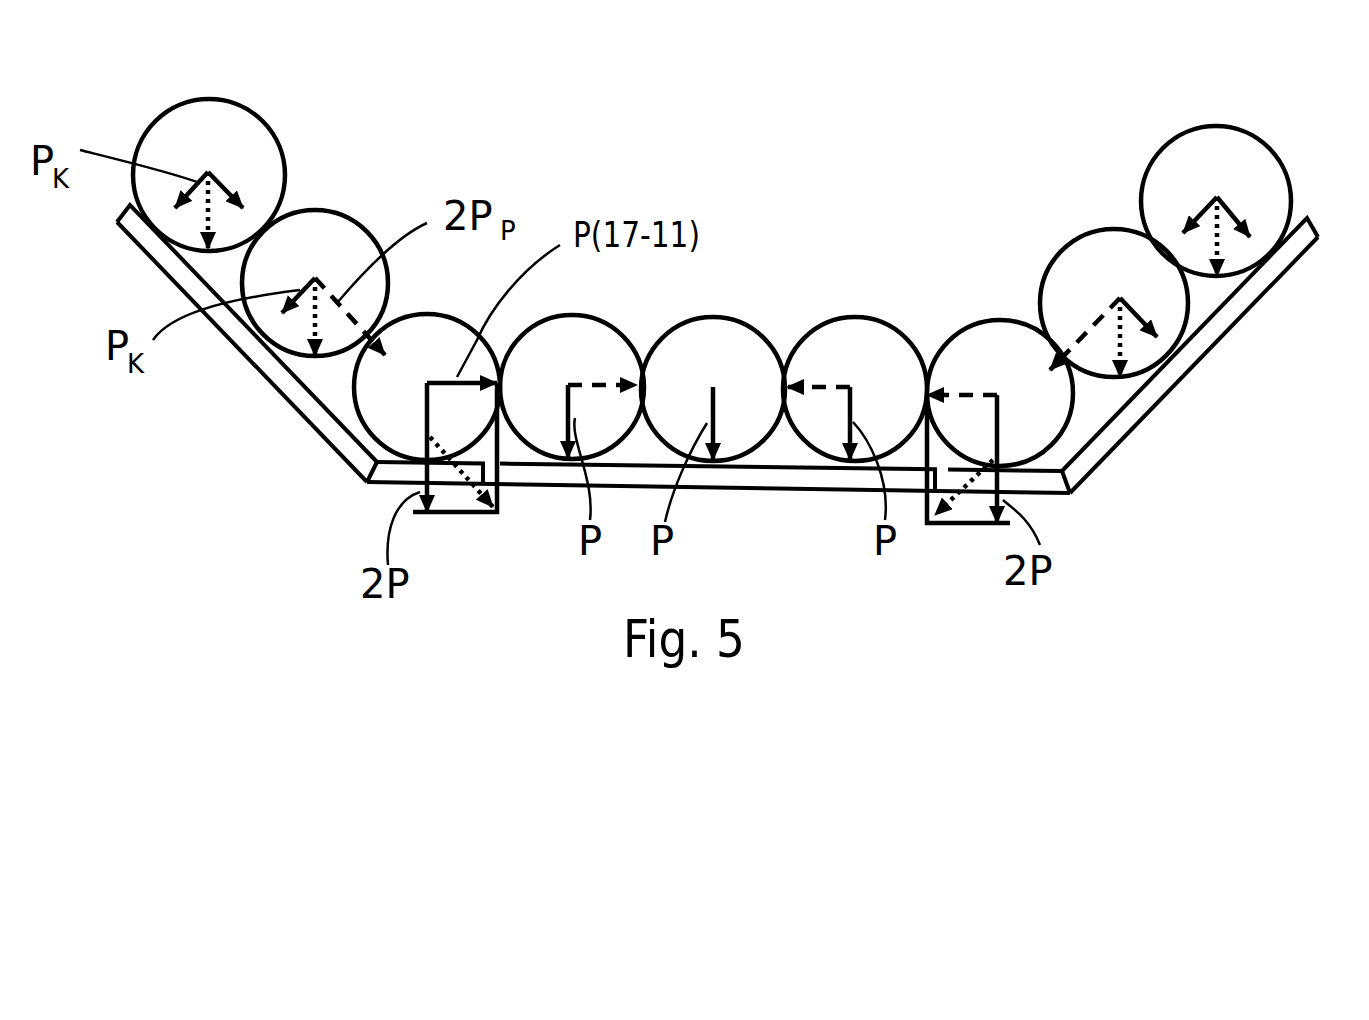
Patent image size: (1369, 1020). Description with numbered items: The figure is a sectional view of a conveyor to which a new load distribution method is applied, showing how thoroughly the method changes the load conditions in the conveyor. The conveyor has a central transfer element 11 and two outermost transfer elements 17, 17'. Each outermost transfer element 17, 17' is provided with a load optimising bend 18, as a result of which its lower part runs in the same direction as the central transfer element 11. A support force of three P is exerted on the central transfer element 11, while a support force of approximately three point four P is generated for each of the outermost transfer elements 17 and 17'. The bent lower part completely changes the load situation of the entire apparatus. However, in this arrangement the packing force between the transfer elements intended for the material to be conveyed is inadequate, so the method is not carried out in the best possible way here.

The central transfer element 11 is at (768, 473).
The outermost transfer element 17 is at (247, 352).
The outermost transfer element 17' is at (1203, 355).
The load optimising bend 18 is at (370, 473).